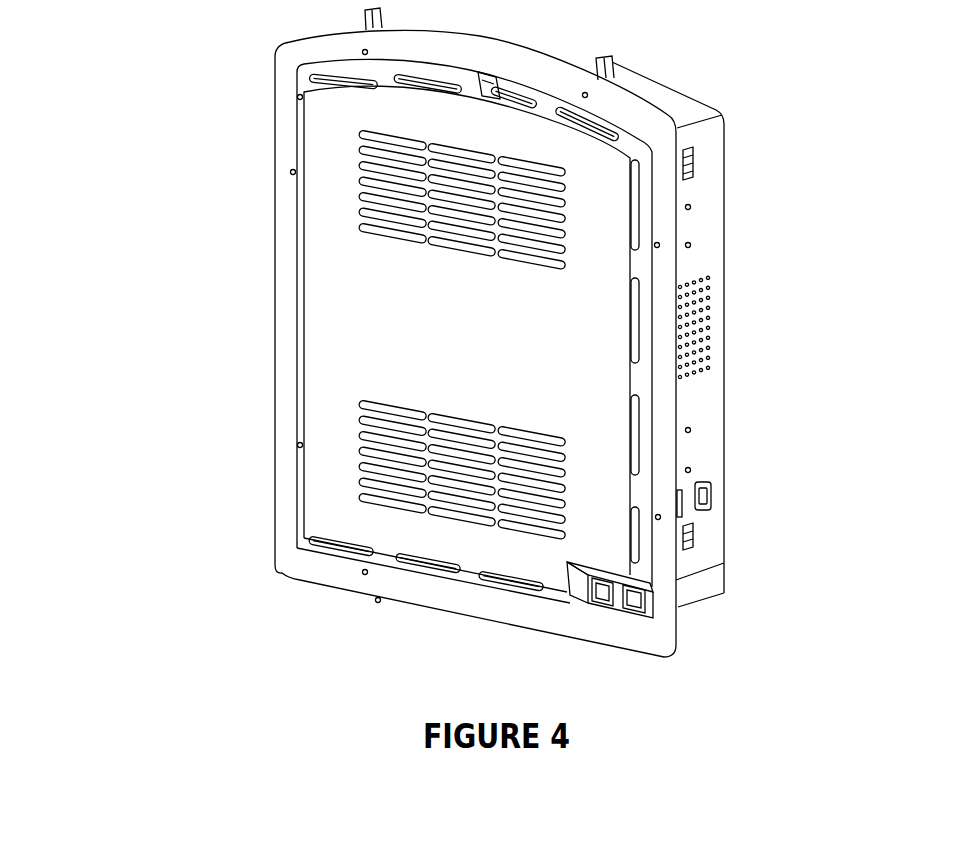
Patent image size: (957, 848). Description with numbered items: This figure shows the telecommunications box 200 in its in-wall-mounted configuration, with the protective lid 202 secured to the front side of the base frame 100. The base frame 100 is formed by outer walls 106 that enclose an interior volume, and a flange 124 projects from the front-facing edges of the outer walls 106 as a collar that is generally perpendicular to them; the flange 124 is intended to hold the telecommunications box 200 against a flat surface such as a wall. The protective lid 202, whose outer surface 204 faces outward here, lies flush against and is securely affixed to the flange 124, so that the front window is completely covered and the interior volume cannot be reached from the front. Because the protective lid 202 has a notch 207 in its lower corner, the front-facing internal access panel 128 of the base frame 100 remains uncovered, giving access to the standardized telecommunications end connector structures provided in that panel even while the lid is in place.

The base frame 100 is at (695, 397).
The outer walls 106 is at (700, 263).
The flange 124 is at (283, 405).
The front-facing internal access panel 128 is at (615, 607).
The telecommunications box 200 is at (752, 135).
The protective lid 202 is at (210, 258).
The outer surface 204 is at (332, 172).
The notch 207 is at (640, 620).